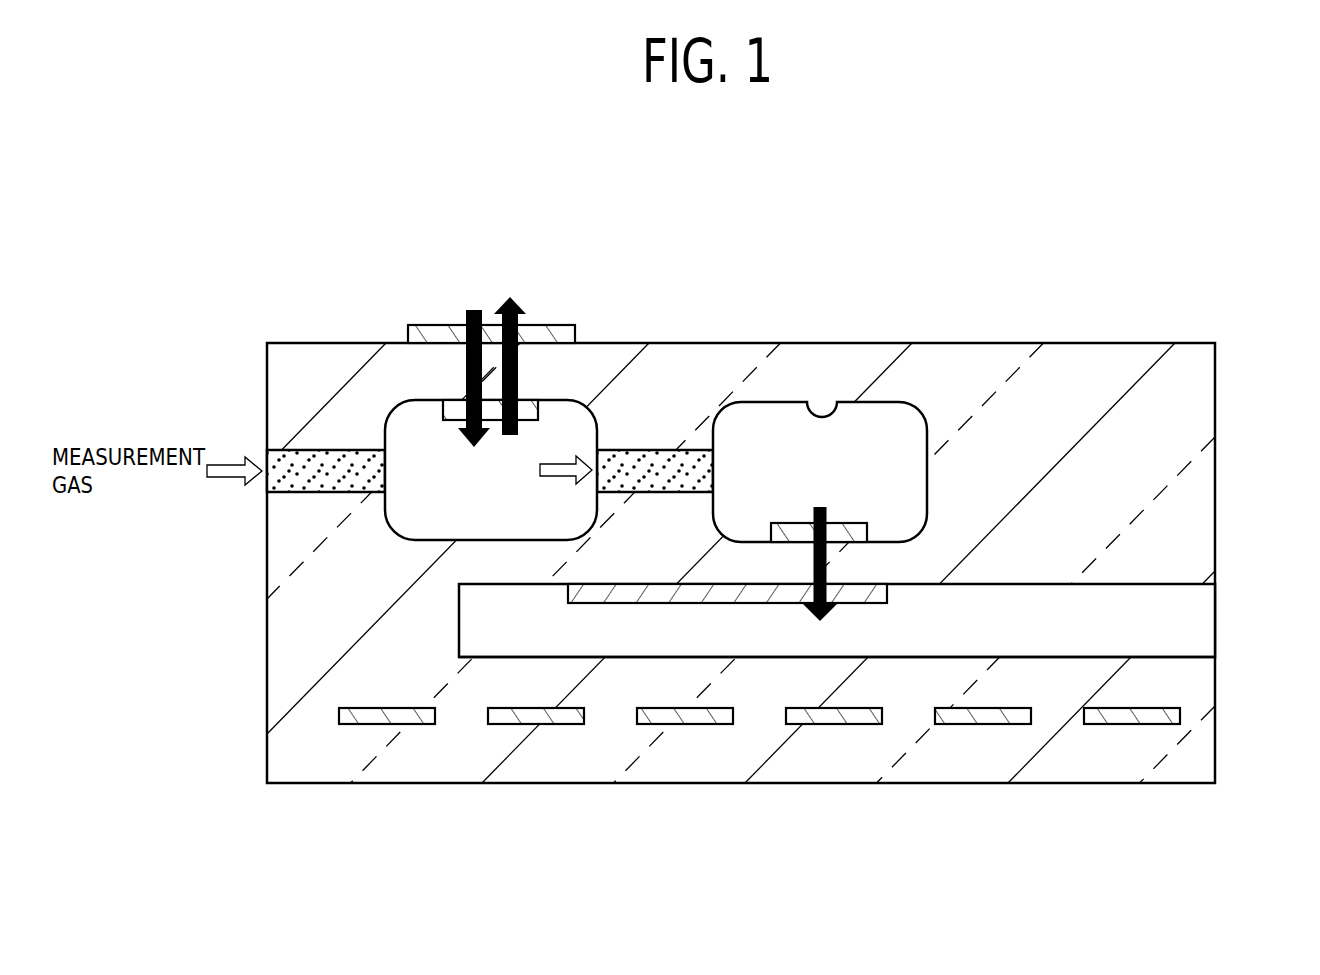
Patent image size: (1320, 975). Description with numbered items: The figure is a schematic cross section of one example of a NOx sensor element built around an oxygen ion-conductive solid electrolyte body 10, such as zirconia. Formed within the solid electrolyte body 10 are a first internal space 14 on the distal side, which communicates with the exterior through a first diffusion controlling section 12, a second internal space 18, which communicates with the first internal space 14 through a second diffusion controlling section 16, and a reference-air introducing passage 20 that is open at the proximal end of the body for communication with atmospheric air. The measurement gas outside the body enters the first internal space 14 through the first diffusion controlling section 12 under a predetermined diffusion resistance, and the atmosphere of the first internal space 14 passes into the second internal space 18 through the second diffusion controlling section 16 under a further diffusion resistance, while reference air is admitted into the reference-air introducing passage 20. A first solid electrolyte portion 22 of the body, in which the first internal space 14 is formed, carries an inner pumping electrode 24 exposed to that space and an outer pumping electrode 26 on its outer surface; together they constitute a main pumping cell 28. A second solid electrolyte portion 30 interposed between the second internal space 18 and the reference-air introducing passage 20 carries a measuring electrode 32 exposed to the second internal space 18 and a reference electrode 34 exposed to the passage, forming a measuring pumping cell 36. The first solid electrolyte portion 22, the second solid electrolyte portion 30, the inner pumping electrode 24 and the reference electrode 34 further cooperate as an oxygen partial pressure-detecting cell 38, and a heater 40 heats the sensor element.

The solid electrolyte body 10 is at (1072, 338).
The first diffusion controlling section 12 is at (312, 460).
The first internal space 14 is at (432, 540).
The second diffusion controlling section 16 is at (645, 462).
The second internal space 18 is at (828, 408).
The reference-air introducing passage 20 is at (689, 657).
The first solid electrolyte portion 22 is at (455, 375).
The inner pumping electrode 24 is at (440, 398).
The outer pumping electrode 26 is at (557, 337).
The main pumping cell 28 is at (385, 312).
The second solid electrolyte portion 30 is at (850, 567).
The measuring electrode 32 is at (853, 521).
The reference electrode 34 is at (860, 603).
The measuring pumping cell 36 is at (912, 605).
The oxygen partial pressure-detecting cell 38 is at (545, 606).
The heater 40 is at (386, 722).